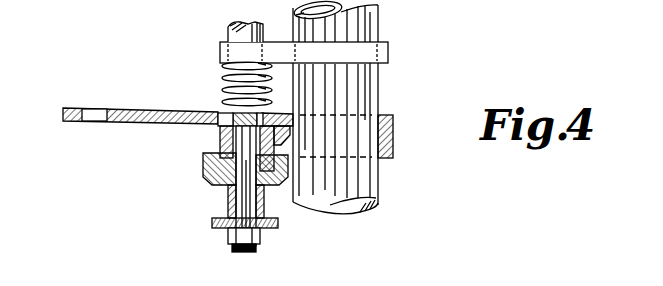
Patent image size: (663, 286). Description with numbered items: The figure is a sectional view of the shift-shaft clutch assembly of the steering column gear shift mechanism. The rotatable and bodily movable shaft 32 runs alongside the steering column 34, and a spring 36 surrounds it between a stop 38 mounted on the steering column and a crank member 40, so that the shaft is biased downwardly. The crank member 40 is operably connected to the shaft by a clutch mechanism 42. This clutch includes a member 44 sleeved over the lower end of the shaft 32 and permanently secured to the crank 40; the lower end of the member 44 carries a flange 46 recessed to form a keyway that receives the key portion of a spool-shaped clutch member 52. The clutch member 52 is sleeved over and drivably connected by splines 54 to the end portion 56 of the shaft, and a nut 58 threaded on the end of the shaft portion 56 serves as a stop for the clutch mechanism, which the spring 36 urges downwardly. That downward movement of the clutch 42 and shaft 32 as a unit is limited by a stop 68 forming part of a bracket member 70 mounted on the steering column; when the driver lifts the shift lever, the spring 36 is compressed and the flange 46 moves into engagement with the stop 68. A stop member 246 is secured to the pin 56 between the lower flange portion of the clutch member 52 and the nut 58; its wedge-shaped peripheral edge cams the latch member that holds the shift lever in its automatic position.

The shaft 32 is at (228, 30).
The steering column 34 is at (379, 185).
The spring 36 is at (221, 78).
The stop 38 is at (358, 50).
The crank member 40 is at (131, 108).
The clutch mechanism 42 is at (210, 179).
The sleeved member 44 is at (218, 137).
The flange 46 is at (205, 160).
The clutch member 52 is at (225, 186).
The splines 54 is at (222, 112).
The end portion of the shaft 56 is at (261, 230).
The nut 58 is at (240, 247).
The stop 68 is at (259, 186).
The bracket member 70 is at (394, 124).
The stop member 246 is at (226, 231).